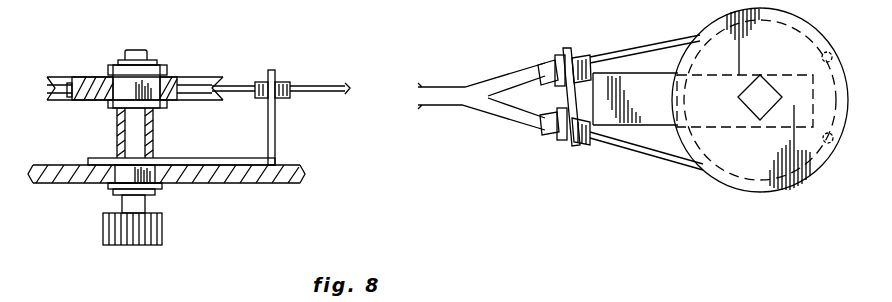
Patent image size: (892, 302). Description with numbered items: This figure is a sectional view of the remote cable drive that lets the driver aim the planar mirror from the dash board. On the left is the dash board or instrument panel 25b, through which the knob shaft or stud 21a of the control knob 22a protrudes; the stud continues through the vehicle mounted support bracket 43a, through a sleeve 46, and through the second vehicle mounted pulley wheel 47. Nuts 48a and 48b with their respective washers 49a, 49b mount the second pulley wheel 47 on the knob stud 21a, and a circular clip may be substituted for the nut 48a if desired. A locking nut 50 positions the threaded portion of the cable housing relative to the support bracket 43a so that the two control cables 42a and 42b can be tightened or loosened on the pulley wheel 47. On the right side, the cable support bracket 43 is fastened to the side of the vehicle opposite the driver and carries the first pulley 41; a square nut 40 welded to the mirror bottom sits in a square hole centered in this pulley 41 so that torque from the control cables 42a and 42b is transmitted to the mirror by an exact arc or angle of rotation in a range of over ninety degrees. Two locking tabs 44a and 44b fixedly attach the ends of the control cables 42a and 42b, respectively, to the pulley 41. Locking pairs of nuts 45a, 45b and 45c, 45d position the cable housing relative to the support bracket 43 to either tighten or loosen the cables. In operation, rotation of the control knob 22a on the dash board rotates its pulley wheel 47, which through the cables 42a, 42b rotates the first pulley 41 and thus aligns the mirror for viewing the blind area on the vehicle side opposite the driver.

The knob shaft 21a is at (140, 28).
The control knob 22a is at (162, 230).
The instrument panel 25b is at (262, 184).
The square nut 40 is at (746, 96).
The pulley 41 is at (760, 100).
The control cable 42a is at (636, 44).
The control cable 42b is at (632, 152).
The cable support bracket 43 is at (703, 100).
The support bracket 43a is at (200, 163).
The locking tab 44a is at (832, 54).
The locking tab 44b is at (832, 143).
The locking nut 45a is at (555, 62).
The locking nut 45b is at (567, 48).
The locking nut 45c is at (574, 146).
The locking nut 45d is at (562, 142).
The sleeve 46 is at (153, 132).
The second pulley wheel 47 is at (216, 78).
The nut 48a is at (104, 100).
The nut 48b is at (160, 188).
The washer 49a is at (108, 70).
The washer 49b is at (108, 186).
The locking nut 50 is at (275, 80).